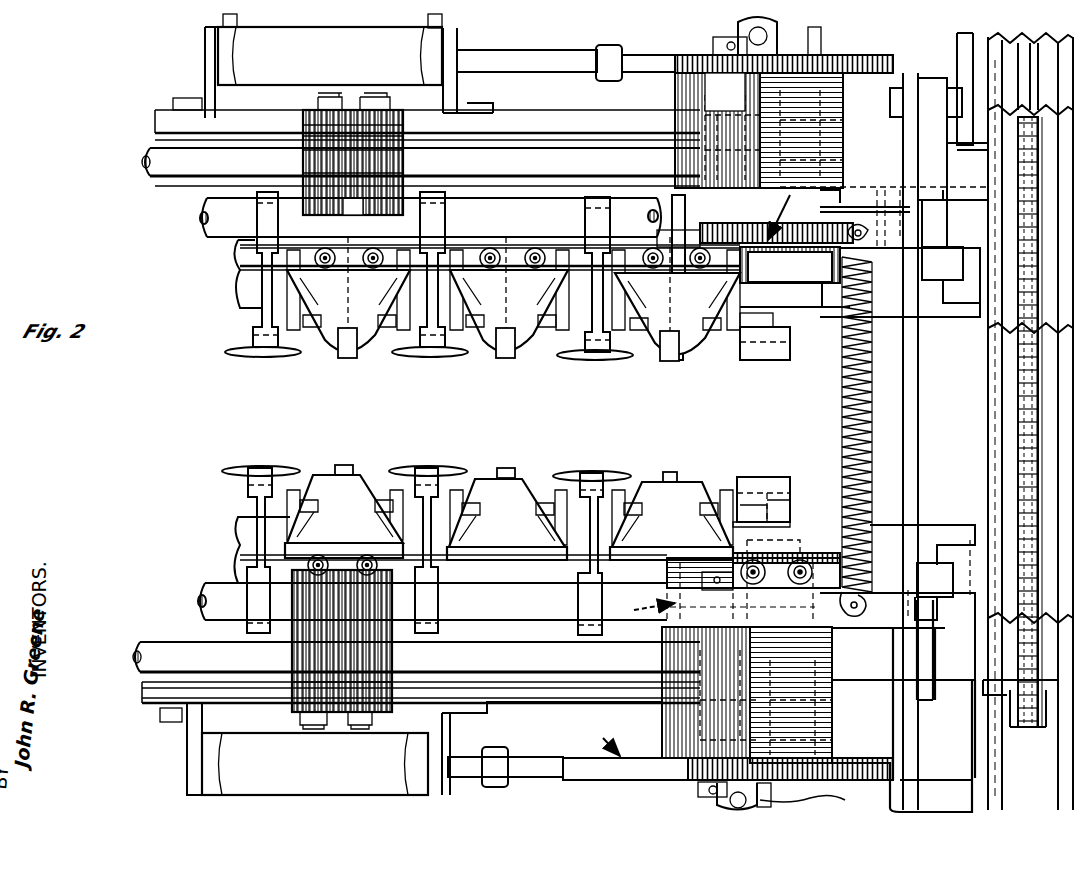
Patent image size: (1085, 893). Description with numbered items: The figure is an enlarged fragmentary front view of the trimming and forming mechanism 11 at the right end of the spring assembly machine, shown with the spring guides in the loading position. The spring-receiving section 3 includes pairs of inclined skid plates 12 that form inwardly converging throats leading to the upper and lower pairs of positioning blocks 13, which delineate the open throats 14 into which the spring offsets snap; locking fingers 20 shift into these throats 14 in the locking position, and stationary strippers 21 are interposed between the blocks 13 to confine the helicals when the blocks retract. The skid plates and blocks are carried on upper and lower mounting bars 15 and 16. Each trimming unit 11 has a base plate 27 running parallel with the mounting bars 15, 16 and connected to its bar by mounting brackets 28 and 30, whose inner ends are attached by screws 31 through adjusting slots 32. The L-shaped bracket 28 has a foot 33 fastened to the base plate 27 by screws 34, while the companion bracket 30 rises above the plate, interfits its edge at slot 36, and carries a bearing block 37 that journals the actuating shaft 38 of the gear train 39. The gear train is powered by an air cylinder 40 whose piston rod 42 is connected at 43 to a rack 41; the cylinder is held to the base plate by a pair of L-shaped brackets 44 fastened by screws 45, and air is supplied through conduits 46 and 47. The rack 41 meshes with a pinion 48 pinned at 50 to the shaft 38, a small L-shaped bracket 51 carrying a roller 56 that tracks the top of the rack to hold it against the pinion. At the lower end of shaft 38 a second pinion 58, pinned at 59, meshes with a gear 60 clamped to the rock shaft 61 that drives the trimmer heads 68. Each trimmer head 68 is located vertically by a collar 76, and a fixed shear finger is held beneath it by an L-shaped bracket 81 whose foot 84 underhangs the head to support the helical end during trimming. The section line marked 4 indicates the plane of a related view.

The spring-receiving section 3 is at (328, 408).
The section line 4- 4 is at (170, 40).
The trimming and forming mechanism 11 is at (632, 82).
The inclined skid plates 12 is at (360, 487).
The positioning blocks 13 is at (520, 362).
The throats 14 is at (333, 347).
The upper mounting bar 15 is at (922, 303).
The lower mounting bar 16 is at (920, 535).
The locking fingers 20 is at (350, 360).
The stationary strippers 21 is at (453, 355).
The base plate 27 is at (610, 135).
The mounting bracket 28 is at (312, 162).
The mounting bracket 30 is at (820, 150).
The screws 31 is at (378, 250).
The slots 32 is at (303, 260).
The foot 33 is at (364, 104).
The screws 34 is at (330, 97).
The slot 36 is at (828, 125).
The bearing block 37 is at (680, 168).
The actuating shaft 38 is at (705, 118).
The gear train 39 is at (693, 464).
The air cylinder 40 is at (254, 748).
The rack 41 is at (642, 60).
The piston rod 42 is at (510, 60).
The connection 43 is at (606, 48).
The L-shaped brackets 44 is at (205, 75).
The screws 45 is at (175, 101).
The conduit 46 is at (223, 20).
The conduit 47 is at (442, 22).
The pinion 48 is at (718, 56).
The pin 50 is at (700, 792).
The L-shaped bracket 51 is at (821, 42).
The second roller 56 is at (778, 32).
The second pinion 58 is at (700, 232).
The pin 59 is at (718, 592).
The gear 60 is at (862, 228).
The rock shaft 61 is at (770, 548).
The trimmer head 68 is at (734, 340).
The collar 76 is at (773, 320).
The L-shaped bracket 81 is at (770, 350).
The foot 84 is at (764, 477).